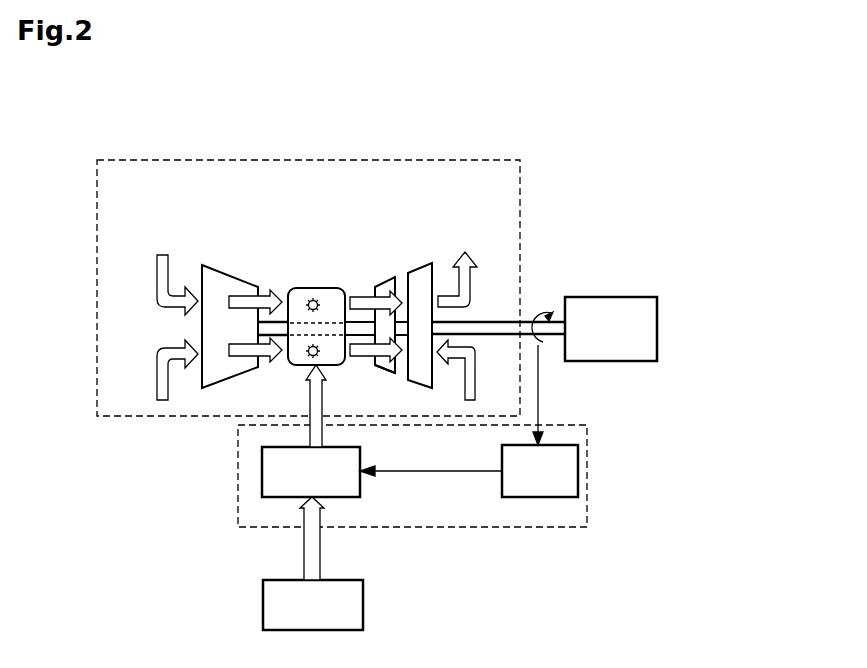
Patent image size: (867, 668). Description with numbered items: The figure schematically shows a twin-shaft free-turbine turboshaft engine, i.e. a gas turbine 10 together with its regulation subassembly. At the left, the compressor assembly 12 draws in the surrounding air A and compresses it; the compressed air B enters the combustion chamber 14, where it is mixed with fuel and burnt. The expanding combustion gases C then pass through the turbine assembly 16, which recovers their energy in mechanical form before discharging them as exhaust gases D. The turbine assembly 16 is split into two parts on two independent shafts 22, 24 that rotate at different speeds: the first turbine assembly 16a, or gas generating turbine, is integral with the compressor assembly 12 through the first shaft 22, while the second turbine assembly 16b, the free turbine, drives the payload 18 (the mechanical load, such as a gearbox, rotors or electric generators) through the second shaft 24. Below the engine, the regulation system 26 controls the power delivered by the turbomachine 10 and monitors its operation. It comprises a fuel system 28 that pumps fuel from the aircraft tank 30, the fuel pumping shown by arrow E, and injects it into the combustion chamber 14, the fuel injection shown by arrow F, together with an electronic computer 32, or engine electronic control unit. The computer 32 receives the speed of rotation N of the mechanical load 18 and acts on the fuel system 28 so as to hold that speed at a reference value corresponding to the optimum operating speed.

The gas turbine 10 is at (131, 152).
The compressor assembly 12 is at (233, 266).
The combustion chamber 14 is at (315, 276).
The turbine assembly 16 is at (397, 266).
The first turbine assembly 16a is at (383, 370).
The second turbine assembly 16b is at (418, 300).
The payload 18 is at (610, 286).
The first shaft 22 is at (258, 330).
The second shaft 24 is at (498, 330).
The regulation system 26 is at (587, 497).
The fuel system 28 is at (262, 470).
The tank 30 is at (363, 600).
The electronic computer 32 is at (578, 468).
The surrounding air A is at (157, 272).
The compressed air B is at (263, 302).
The combustion gases C is at (368, 305).
The exhaust gases D is at (473, 280).
The fuel pumping E is at (322, 567).
The fuel injection F is at (312, 405).
The speed of rotation N is at (550, 378).